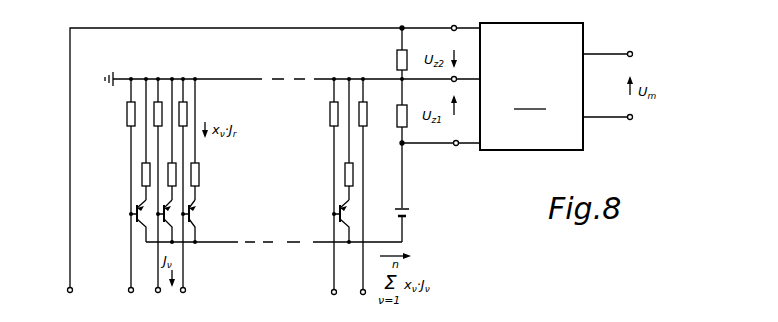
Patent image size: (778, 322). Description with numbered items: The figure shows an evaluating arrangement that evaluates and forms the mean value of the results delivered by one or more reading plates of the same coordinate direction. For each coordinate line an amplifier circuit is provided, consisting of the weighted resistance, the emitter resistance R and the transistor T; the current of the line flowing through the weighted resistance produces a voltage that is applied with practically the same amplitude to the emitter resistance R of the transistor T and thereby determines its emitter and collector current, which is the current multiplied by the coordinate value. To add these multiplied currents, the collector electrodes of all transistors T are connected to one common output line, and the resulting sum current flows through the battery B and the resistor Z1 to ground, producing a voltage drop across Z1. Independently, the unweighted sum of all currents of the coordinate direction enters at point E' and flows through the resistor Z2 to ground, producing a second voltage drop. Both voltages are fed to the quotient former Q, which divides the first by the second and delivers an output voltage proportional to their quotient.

The emitter resistance R is at (177, 66).
The transistor T is at (239, 221).
The resistor Z1 is at (393, 111).
The resistor Z2 is at (389, 53).
The battery B is at (406, 192).
The quotient former Q is at (556, 86).
The point E' is at (61, 291).